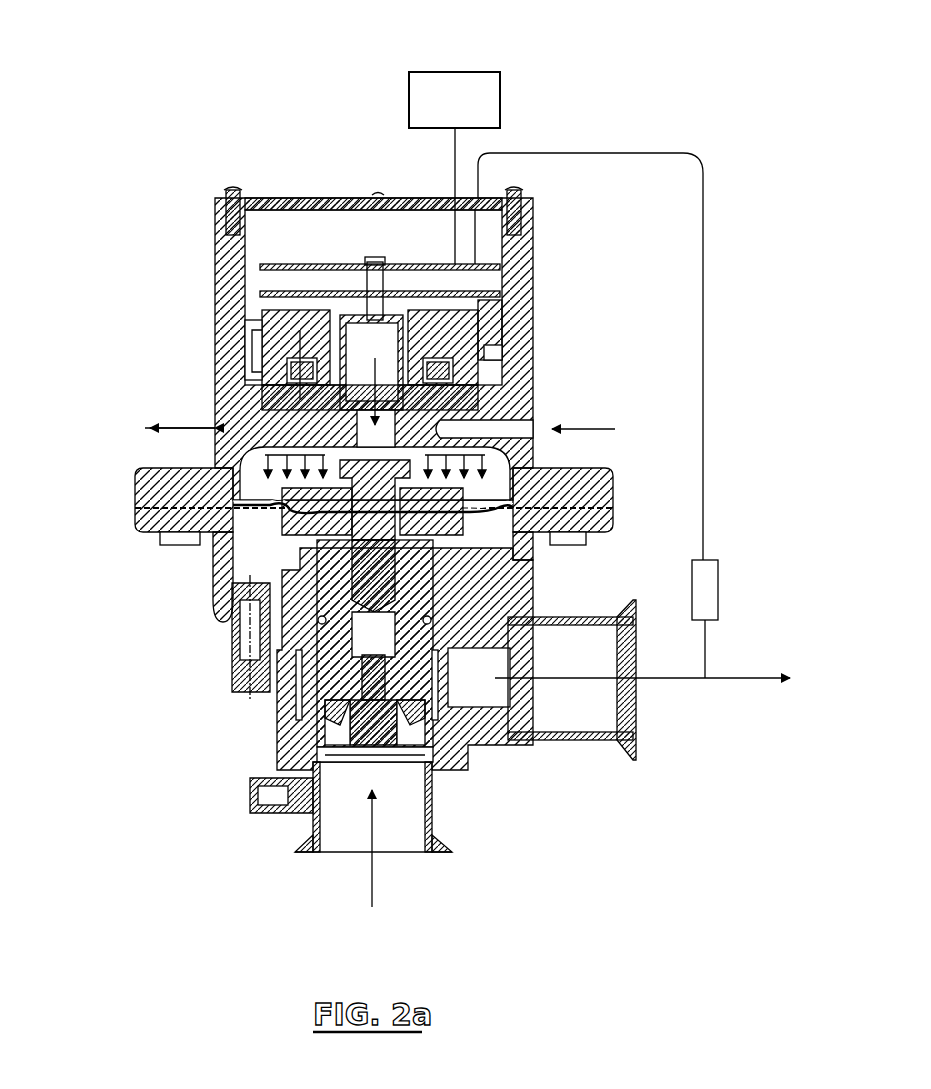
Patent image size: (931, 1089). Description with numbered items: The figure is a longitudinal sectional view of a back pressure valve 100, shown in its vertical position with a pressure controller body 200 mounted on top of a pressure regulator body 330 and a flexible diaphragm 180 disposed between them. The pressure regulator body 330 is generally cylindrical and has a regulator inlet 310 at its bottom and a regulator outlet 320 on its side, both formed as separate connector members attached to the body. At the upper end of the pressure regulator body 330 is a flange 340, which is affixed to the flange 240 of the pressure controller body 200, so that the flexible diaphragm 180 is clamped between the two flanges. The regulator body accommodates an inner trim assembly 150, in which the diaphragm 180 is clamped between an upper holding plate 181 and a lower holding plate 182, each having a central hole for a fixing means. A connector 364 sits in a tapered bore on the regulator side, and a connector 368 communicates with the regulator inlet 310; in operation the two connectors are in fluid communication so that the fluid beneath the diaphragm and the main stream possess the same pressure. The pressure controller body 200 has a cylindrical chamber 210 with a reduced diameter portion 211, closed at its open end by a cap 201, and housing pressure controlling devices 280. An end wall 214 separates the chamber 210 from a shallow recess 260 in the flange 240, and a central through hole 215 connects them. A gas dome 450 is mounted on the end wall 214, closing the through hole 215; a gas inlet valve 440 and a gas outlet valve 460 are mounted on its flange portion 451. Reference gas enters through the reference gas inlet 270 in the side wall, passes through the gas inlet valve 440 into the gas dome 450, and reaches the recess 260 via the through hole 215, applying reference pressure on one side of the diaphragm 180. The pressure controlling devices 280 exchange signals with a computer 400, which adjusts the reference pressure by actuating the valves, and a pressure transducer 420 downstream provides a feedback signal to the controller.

The back pressure valve 100 is at (580, 104).
The pressure controller body 200 is at (582, 232).
The cap 201 is at (345, 198).
The cylindrical chamber 210 is at (270, 222).
The reduced diameter portion 211 is at (487, 358).
The end wall 214 is at (300, 430).
The through hole 215 is at (340, 400).
The flange 240 is at (613, 490).
The recess 260 is at (270, 478).
The reference gas inlet 270 is at (520, 430).
The pressure controlling devices 280 is at (316, 265).
The regulator inlet 310 is at (342, 835).
The regulator outlet 320 is at (578, 715).
The pressure regulator body 330 is at (540, 585).
The flange 340 is at (613, 515).
The connector 364 is at (240, 660).
The connector 368 is at (250, 795).
The computer 400 is at (475, 85).
The pressure transducer 420 is at (718, 592).
The gas inlet valve 440 is at (500, 310).
The gas dome 450 is at (355, 335).
The flange portion 451 is at (475, 398).
The gas outlet valve 460 is at (283, 330).
The flexible diaphragm 180 is at (228, 555).
The upper holding plate 181 is at (500, 470).
The lower holding plate 182 is at (145, 508).
The inner trim assembly 150 is at (290, 600).